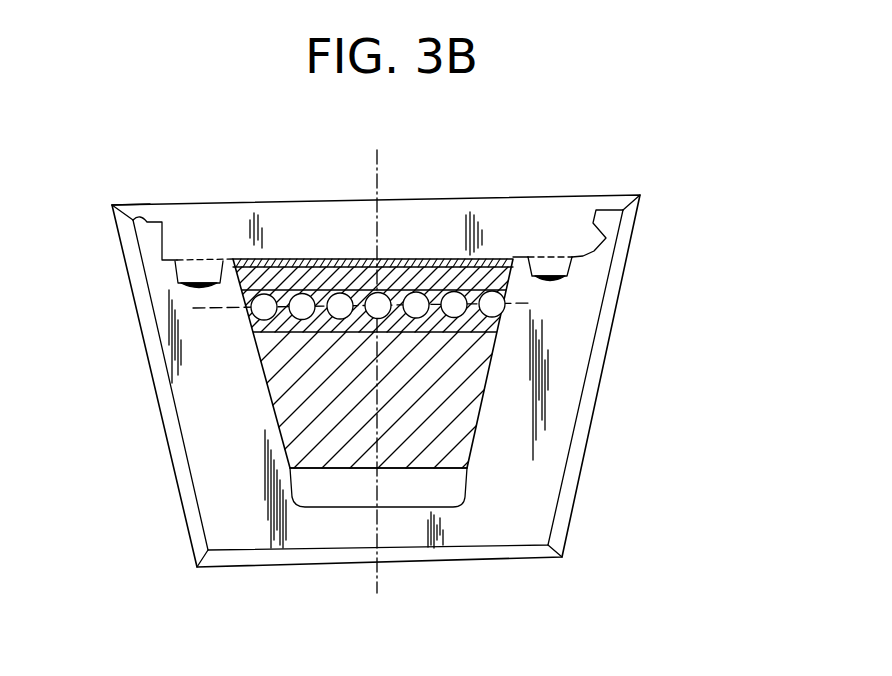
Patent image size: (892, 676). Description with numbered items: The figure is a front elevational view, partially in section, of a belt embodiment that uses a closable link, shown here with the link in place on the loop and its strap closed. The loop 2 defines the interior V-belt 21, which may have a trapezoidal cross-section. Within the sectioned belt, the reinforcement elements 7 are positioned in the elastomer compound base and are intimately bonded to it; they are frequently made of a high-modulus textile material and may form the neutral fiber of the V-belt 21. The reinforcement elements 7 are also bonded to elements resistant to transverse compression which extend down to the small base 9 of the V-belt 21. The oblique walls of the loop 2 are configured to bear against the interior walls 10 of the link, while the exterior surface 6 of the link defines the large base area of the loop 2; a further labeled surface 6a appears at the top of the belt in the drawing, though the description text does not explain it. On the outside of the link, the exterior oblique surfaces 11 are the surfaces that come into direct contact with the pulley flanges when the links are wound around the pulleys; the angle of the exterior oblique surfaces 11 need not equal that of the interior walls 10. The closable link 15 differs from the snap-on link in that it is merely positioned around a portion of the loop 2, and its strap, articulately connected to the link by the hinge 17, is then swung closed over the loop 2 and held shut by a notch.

The loop 2 is at (302, 440).
The exterior surface 6 is at (450, 248).
The top cover layer 6a is at (302, 260).
The reinforcement elements 7 is at (255, 312).
The small base 9 is at (397, 468).
The interior walls 10 is at (486, 476).
The exterior oblique surfaces 11 is at (151, 407).
The closable link 15 is at (543, 413).
The hinge 17 is at (129, 194).
The V-belt 21 is at (435, 418).